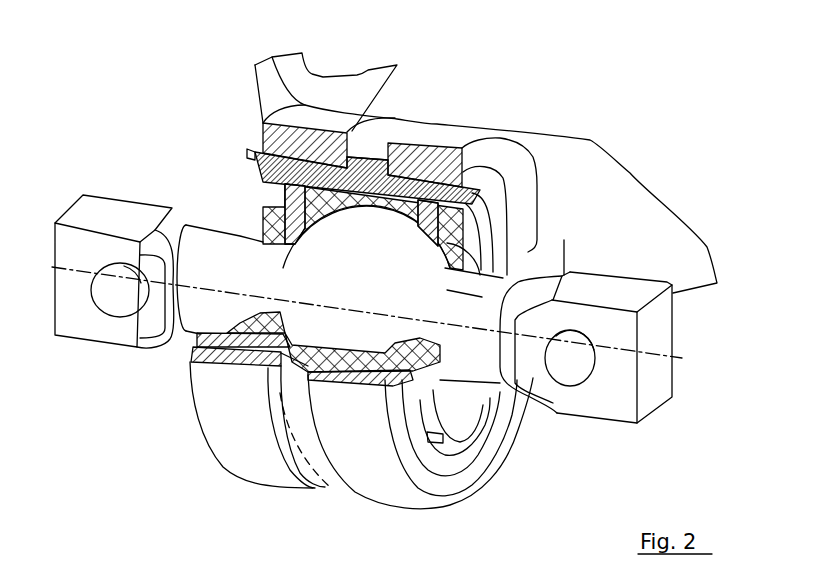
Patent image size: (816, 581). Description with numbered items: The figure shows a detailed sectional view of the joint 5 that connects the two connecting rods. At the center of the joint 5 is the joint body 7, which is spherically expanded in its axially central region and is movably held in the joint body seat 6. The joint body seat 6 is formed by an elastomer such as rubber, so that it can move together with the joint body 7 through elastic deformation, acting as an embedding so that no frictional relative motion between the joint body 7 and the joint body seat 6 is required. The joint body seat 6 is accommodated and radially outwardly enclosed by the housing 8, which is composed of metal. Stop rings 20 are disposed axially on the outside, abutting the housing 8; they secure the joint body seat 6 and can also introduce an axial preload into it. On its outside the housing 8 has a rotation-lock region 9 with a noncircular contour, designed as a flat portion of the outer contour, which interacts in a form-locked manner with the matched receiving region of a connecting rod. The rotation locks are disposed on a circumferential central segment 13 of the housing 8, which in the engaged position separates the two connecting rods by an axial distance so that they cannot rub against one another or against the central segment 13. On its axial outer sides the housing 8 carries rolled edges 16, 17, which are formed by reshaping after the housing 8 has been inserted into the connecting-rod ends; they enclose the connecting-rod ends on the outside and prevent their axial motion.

The joint 5 is at (561, 195).
The joint body seat 6 is at (407, 205).
The joint body 7 is at (565, 397).
The housing 8 is at (272, 172).
The rotation-lock region 9 is at (369, 148).
The circumferential central segment 13 is at (303, 447).
The rolled edge 16 is at (253, 155).
The rolled edge 17 is at (437, 230).
The stop ring 20 is at (262, 200).